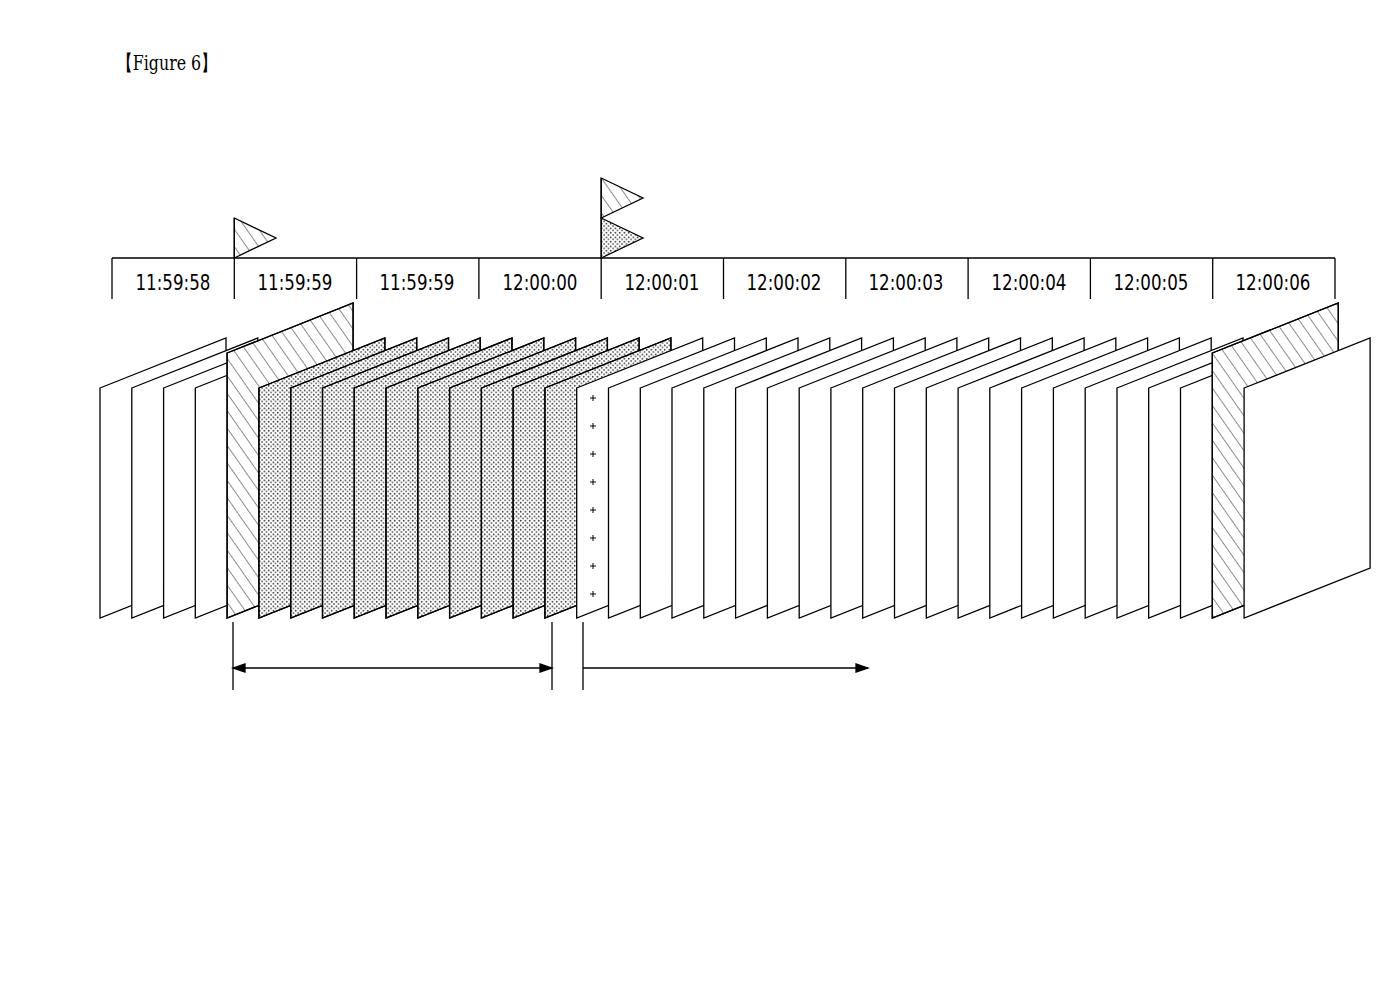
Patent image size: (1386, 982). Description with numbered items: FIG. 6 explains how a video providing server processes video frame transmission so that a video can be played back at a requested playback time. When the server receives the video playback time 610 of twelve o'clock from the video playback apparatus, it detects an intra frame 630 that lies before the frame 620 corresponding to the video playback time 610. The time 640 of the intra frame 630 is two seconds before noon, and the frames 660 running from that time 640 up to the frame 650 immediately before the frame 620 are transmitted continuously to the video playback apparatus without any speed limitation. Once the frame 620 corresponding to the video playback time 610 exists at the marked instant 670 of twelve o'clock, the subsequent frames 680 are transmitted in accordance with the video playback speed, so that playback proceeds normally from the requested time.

The video playback time 610 is at (620, 188).
The frame corresponding to the video playback time 620 is at (592, 620).
The intra frame 630 is at (227, 592).
The time of the intra frame 640 is at (255, 228).
The frame immediately before the frame of the video playback time 650 is at (562, 620).
The frames 660 is at (392, 662).
The 12:00:00 670 is at (628, 229).
The subsequent frames 680 is at (725, 662).